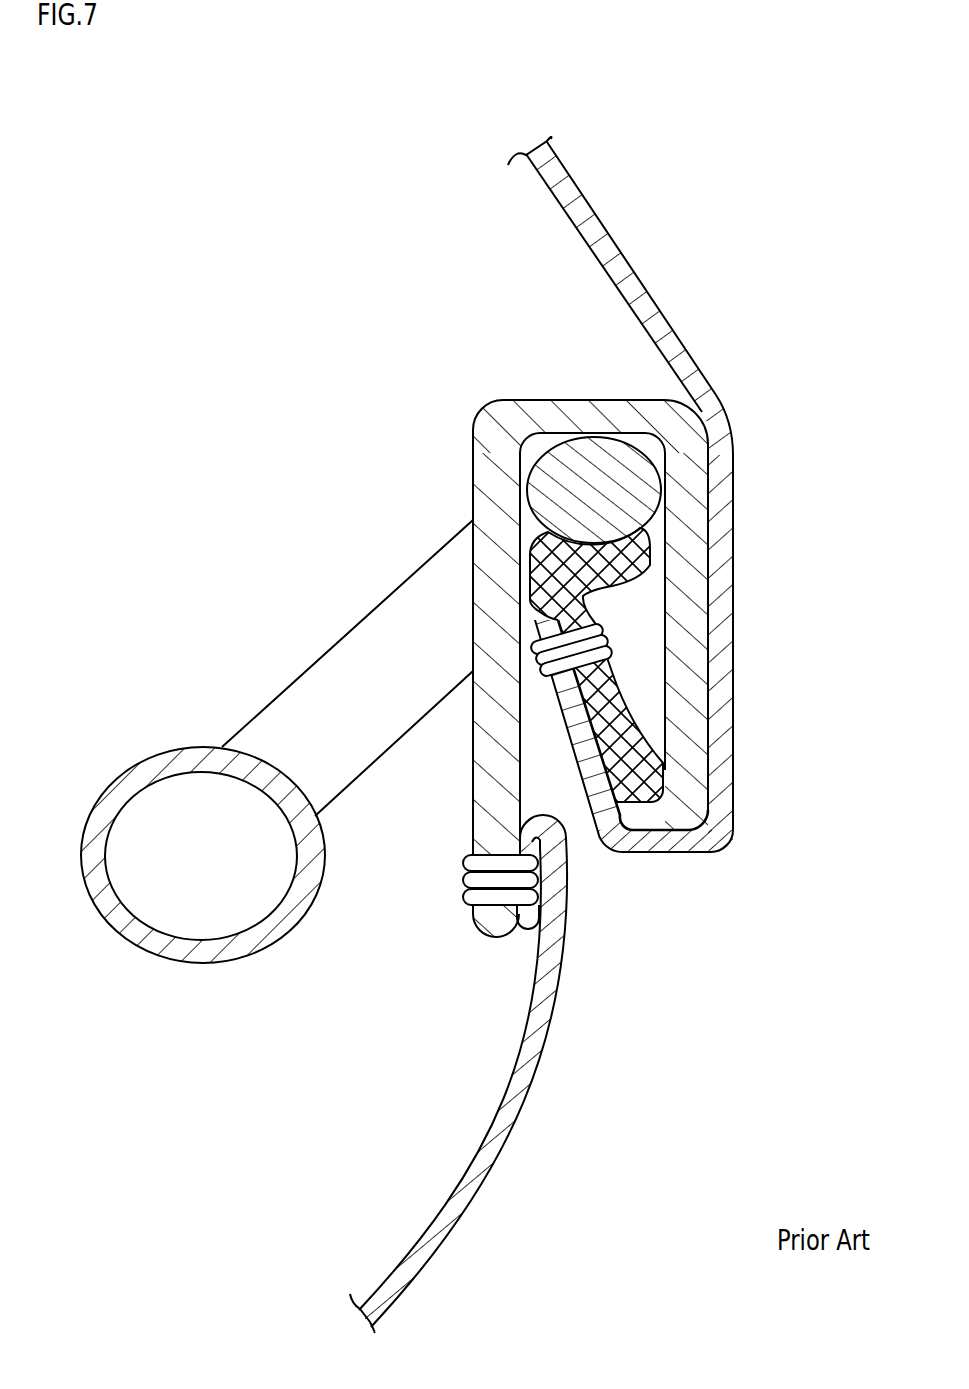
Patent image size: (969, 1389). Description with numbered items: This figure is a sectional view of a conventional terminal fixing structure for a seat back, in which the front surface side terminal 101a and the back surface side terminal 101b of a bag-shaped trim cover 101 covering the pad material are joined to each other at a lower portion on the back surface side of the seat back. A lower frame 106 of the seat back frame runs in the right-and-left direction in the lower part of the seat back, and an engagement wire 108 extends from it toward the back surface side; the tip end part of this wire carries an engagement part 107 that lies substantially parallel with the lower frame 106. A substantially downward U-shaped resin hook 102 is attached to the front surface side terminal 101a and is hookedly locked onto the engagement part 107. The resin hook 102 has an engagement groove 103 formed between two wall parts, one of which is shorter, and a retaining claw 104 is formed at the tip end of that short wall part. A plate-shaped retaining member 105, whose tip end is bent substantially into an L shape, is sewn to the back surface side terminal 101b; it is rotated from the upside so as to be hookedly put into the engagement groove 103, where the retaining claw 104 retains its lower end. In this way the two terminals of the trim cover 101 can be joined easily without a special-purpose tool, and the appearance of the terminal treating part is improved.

The trim cover 101 is at (660, 312).
The front surface side terminal 101a is at (568, 898).
The back surface side terminal 101b is at (572, 712).
The resin hook 102 is at (495, 445).
The engagement groove 103 is at (648, 652).
The retaining claw 104 is at (660, 815).
The plate-shaped retaining member 105 is at (668, 764).
The lower frame 106 is at (200, 955).
The engagement part 107 is at (563, 460).
The engagement wire 108 is at (356, 652).